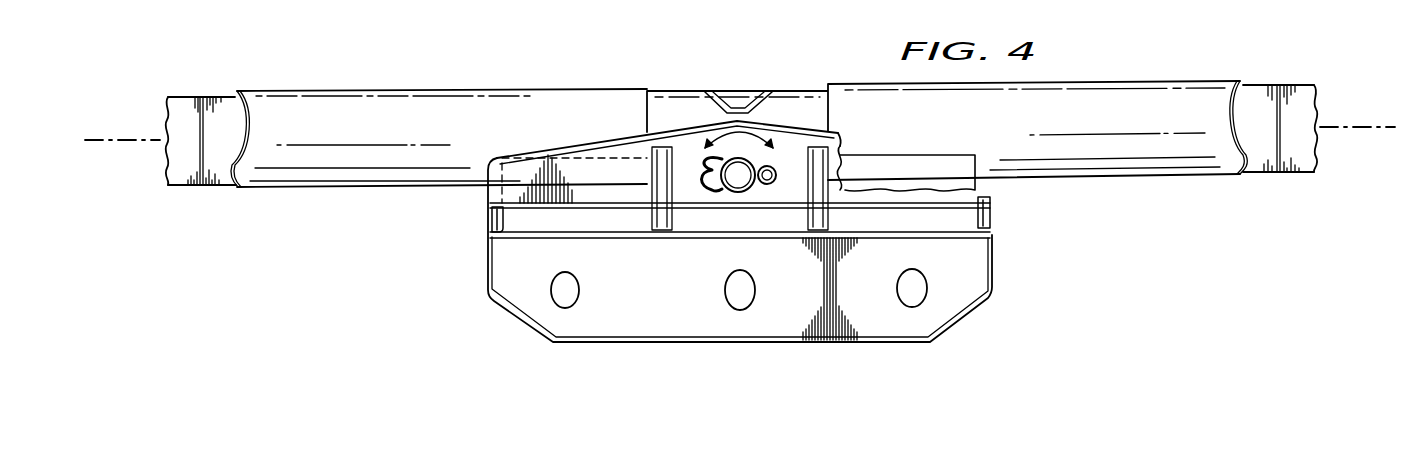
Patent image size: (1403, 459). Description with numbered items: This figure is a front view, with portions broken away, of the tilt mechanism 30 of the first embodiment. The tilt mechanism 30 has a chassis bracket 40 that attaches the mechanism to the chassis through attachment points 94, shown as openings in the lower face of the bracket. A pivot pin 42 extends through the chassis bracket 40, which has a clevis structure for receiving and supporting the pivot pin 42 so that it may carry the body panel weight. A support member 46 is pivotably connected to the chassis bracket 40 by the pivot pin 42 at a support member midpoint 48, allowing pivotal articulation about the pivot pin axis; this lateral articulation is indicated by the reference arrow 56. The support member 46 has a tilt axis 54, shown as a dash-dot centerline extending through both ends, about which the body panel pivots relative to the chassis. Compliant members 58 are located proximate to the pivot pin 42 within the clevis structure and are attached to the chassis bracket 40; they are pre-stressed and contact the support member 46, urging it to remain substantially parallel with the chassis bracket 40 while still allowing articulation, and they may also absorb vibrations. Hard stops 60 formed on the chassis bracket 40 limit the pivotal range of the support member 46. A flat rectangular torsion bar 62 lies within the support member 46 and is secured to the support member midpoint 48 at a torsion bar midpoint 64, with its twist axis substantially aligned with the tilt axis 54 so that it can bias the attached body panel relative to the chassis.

The tilt mechanism 30 is at (744, 350).
The chassis bracket 40 is at (690, 297).
The pivot pin 42 is at (741, 180).
The support member 46 is at (445, 88).
The support member midpoint 48 is at (793, 88).
The tilt axis 54 is at (100, 140).
The reference arrow 56 is at (720, 130).
The compliant members 58 is at (597, 158).
The hard stops 60 is at (488, 213).
The torsion bar 62 is at (175, 97).
The torsion bar midpoint 64 is at (740, 100).
The attachment points 94 is at (573, 283).